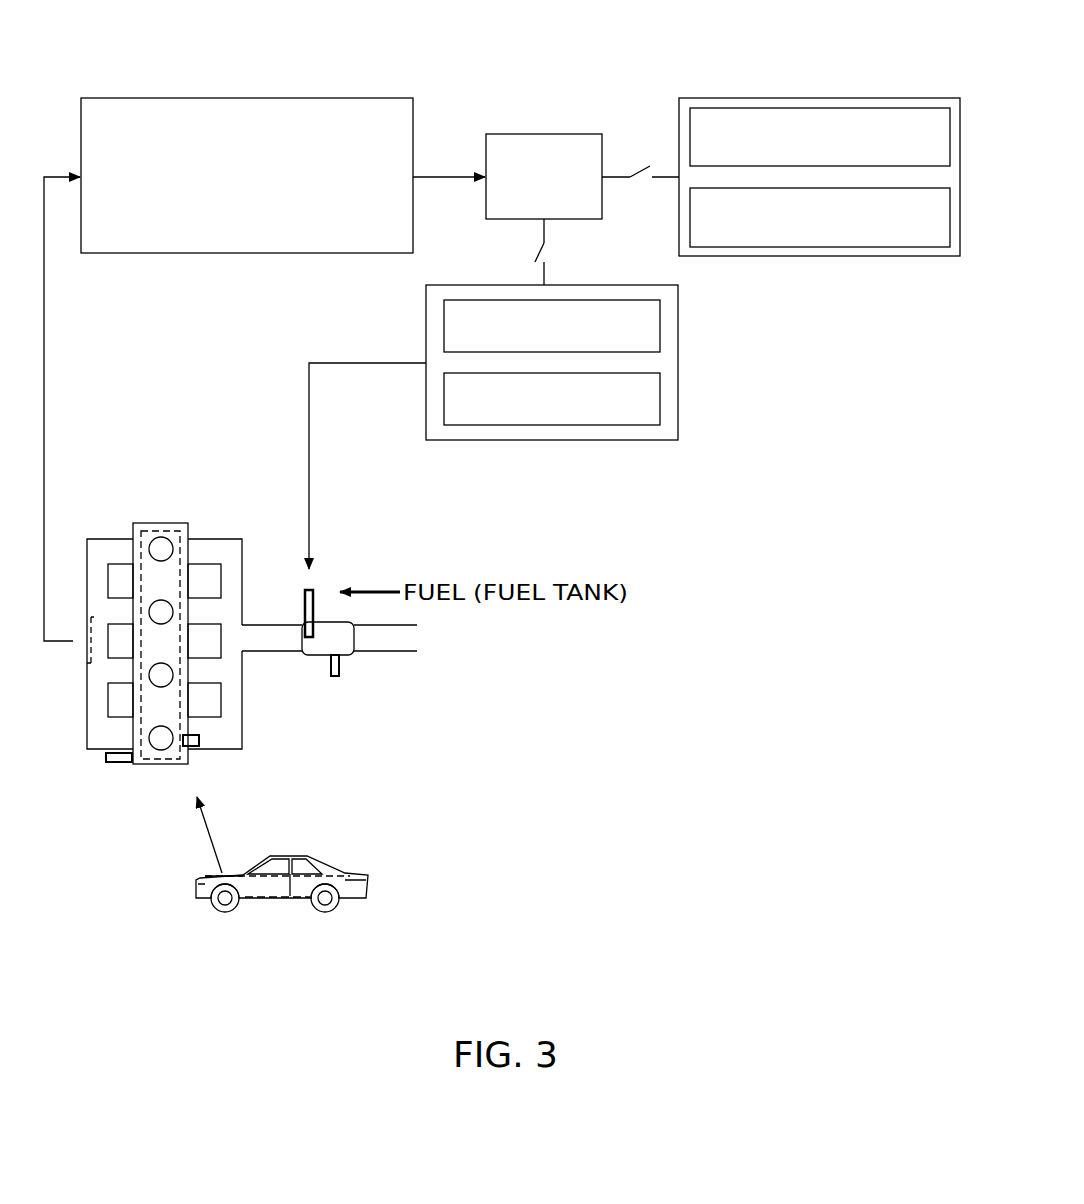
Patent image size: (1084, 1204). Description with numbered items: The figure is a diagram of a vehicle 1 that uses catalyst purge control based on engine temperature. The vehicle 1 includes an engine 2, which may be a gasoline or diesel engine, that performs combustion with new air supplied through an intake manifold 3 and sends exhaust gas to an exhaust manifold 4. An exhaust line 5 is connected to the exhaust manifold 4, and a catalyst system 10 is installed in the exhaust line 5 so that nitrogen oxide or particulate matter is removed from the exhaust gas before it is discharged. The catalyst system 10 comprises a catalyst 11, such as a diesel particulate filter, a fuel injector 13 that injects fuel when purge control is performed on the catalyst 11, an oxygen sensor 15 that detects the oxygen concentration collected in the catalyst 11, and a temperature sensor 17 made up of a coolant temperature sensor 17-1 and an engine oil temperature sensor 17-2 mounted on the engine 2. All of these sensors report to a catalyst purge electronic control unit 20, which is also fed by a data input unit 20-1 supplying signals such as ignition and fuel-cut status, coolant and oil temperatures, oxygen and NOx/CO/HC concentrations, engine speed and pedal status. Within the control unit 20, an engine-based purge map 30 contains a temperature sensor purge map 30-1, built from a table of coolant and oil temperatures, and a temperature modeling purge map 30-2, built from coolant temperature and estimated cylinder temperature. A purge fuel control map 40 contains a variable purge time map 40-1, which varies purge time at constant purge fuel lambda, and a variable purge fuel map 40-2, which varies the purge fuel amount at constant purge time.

The vehicle 1 is at (318, 858).
The engine 2 is at (160, 523).
The intake manifold 3 is at (126, 549).
The exhaust manifold 4 is at (196, 549).
The exhaust line 5 is at (270, 653).
The catalyst system 10 is at (698, 501).
The catalyst 11 is at (343, 640).
The fuel injector 13 is at (314, 590).
The oxygen sensor 15 is at (337, 678).
The temperature sensor 17 is at (127, 813).
The coolant temperature sensor 17-1 is at (185, 768).
The engine oil temperature sensor 17-2 is at (94, 797).
The catalyst purge electronic control unit 20 is at (544, 134).
The data input unit 20-1 is at (247, 98).
The engine-based purge map 30 is at (750, 98).
The temperature sensor purge map 30-1 is at (905, 108).
The temperature modeling purge map 30-2 is at (908, 247).
The purge fuel control map 40 is at (678, 360).
The variable purge time map 40-1 is at (660, 312).
The variable purge fuel map 40-2 is at (660, 398).